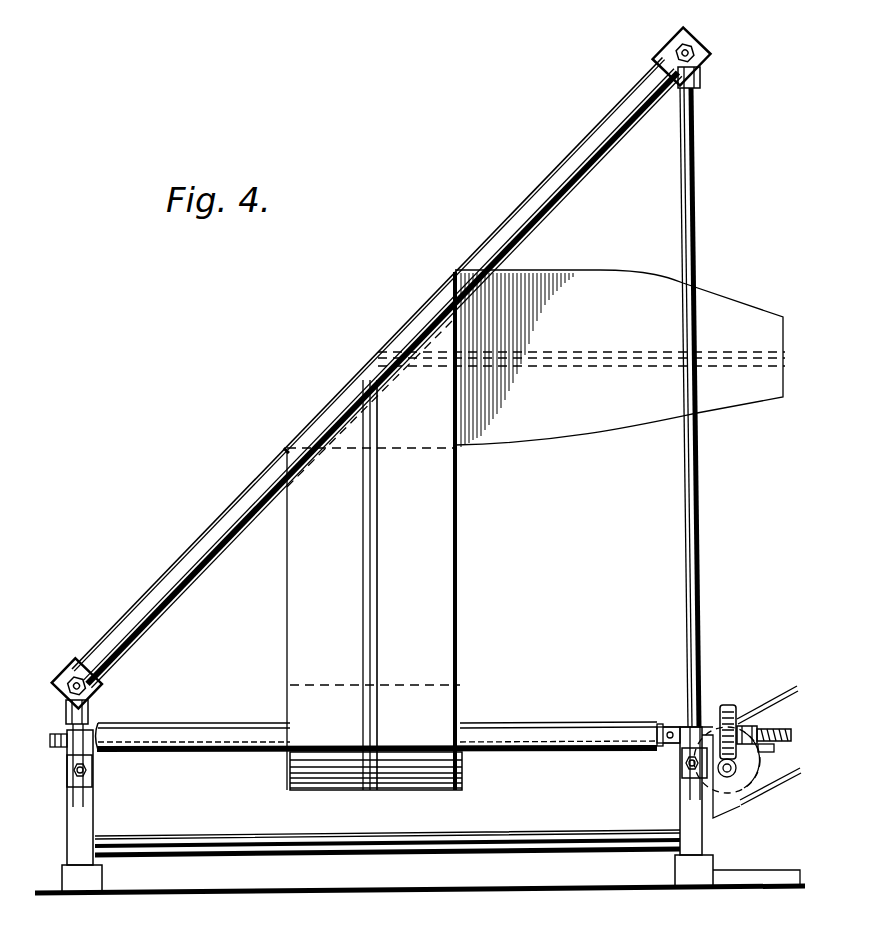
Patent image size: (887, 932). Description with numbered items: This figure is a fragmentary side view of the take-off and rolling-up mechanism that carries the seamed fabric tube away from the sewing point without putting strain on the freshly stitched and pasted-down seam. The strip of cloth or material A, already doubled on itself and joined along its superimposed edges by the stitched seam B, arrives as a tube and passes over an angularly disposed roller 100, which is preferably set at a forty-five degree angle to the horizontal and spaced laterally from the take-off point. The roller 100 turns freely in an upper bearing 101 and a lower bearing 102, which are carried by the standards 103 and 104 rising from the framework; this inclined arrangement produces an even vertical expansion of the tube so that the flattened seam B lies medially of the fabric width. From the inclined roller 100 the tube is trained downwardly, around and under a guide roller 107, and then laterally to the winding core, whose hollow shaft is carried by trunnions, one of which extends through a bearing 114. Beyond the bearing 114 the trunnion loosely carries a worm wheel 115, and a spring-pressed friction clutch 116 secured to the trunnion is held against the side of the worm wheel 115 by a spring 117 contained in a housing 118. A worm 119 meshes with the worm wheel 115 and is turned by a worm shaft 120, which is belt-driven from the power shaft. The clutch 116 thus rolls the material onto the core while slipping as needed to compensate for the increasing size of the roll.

The angularly disposed roller 100 is at (539, 188).
The upper bearing 101 is at (690, 30).
The lower bearing 102 is at (77, 672).
The standard 103 is at (711, 407).
The standard 104 is at (66, 723).
The guide roller 107 is at (208, 727).
The bearing 114 is at (686, 727).
The worm wheel 115 is at (727, 707).
The spring-pressed friction clutch 116 is at (738, 718).
The spring 117 is at (768, 752).
The housing 118 is at (788, 729).
The worm 119 is at (742, 787).
The worm shaft 120 is at (735, 798).
The strip of cloth or material A is at (460, 575).
The stitched seam B is at (376, 556).